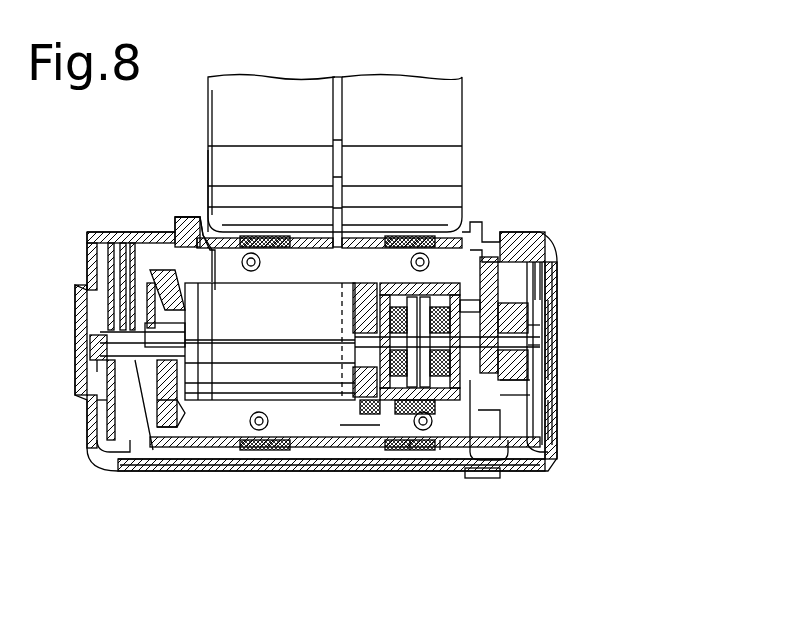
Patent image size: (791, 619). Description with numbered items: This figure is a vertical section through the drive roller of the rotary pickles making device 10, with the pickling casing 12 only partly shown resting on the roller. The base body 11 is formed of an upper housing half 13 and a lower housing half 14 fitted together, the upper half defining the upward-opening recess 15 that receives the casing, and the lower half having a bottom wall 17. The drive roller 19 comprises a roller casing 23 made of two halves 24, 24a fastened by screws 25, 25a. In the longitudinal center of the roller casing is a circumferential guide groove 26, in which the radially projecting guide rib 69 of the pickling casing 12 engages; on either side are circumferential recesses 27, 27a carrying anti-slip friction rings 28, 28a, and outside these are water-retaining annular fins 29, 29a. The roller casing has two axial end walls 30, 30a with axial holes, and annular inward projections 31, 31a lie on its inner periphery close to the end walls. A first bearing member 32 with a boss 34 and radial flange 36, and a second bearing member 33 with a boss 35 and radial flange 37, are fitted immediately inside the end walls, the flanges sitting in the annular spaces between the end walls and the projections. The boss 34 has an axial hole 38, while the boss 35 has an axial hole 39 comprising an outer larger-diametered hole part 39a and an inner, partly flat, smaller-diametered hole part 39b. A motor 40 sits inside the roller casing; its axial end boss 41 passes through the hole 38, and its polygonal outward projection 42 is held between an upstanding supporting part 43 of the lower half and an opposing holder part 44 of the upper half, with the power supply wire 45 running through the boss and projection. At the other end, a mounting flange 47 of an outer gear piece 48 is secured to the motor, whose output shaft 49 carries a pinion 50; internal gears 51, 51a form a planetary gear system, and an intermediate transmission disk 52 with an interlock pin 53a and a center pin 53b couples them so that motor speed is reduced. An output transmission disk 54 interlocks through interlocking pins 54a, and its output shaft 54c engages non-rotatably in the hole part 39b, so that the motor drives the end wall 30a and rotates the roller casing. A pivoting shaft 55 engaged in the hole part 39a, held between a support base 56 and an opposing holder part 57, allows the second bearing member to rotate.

The rotary pickles making device 10 is at (467, 204).
The base body 11 is at (557, 251).
The pickling casing 12 is at (470, 82).
The upper housing half 13 is at (503, 233).
The lower housing half 14 is at (500, 475).
The recess 15 is at (200, 232).
The bottom wall 17 is at (285, 472).
The drive roller 19 is at (128, 235).
The roller casing 23 is at (207, 190).
The half 24 is at (170, 238).
The half 24a is at (183, 430).
The screw 25 is at (255, 240).
The screw 25a is at (413, 453).
The circumferential guide groove 26 is at (325, 240).
The circumferential recess 27 is at (278, 453).
The circumferential recess 27a is at (445, 445).
The friction ring 28 is at (240, 460).
The friction ring 28a is at (373, 453).
The water-retaining annular fin 29 is at (195, 240).
The water-retaining annular fin 29a is at (503, 217).
The axial end wall 30 is at (120, 267).
The axial end wall 30a is at (550, 288).
The annular inward projection 31 is at (185, 250).
The annular inward projection 31a is at (535, 278).
The first bearing member 32 is at (100, 400).
The second bearing member 33 is at (512, 445).
The boss 34 is at (130, 312).
The boss 35 is at (547, 370).
The radial flange 36 is at (135, 440).
The radial flange 37 is at (493, 420).
The axial hole 38 is at (120, 378).
The axial hole 39 is at (555, 405).
The larger-diametered hole part 39a is at (553, 378).
The smaller-diametered hole part 39b is at (550, 418).
The motor 40 is at (228, 373).
The axial end boss 41 is at (100, 347).
The axially outward projection 42 is at (110, 337).
The upstanding supporting part 43 is at (117, 423).
The holder part 44 is at (127, 288).
The power supply wire 45 is at (97, 360).
The mounting flange 47 is at (348, 432).
The outer gear piece 48 is at (367, 445).
The output shaft 49 is at (440, 290).
The pinion 50 is at (340, 425).
The internal gear 51 is at (420, 290).
The internal gear 51a is at (455, 260).
The intermediate transmission disk 52 is at (418, 437).
The interlock pin 53a is at (523, 320).
The center pin 53b is at (547, 343).
The output transmission disk 54 is at (477, 412).
The interlocking pin 54a is at (540, 328).
The output shaft 54c is at (480, 430).
The pivoting shaft 55 is at (540, 395).
The support base 56 is at (550, 433).
The holder part 57 is at (548, 345).
The guide rib 69 is at (343, 80).